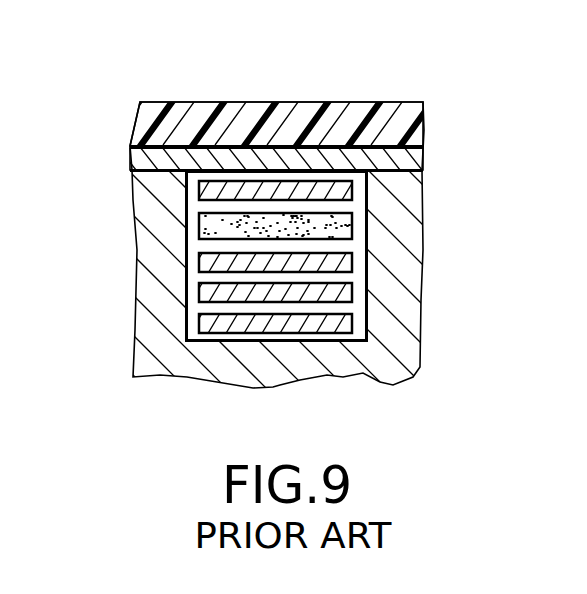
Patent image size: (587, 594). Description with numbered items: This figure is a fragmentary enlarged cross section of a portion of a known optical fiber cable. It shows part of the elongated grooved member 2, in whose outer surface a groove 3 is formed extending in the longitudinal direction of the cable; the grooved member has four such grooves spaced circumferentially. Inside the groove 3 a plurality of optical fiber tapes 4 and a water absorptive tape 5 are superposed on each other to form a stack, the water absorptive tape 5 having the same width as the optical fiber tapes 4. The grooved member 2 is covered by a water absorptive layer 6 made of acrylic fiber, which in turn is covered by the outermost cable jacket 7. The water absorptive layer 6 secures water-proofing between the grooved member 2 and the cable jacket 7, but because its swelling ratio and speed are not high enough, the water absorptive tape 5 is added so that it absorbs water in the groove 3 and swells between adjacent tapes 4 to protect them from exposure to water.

The grooved member 2 is at (225, 353).
The groove 3 is at (187, 253).
The optical fiber tape 4 is at (348, 195).
The water absorptive tape 5 is at (348, 228).
The water absorptive layer 6 is at (402, 160).
The cable jacket 7 is at (316, 102).